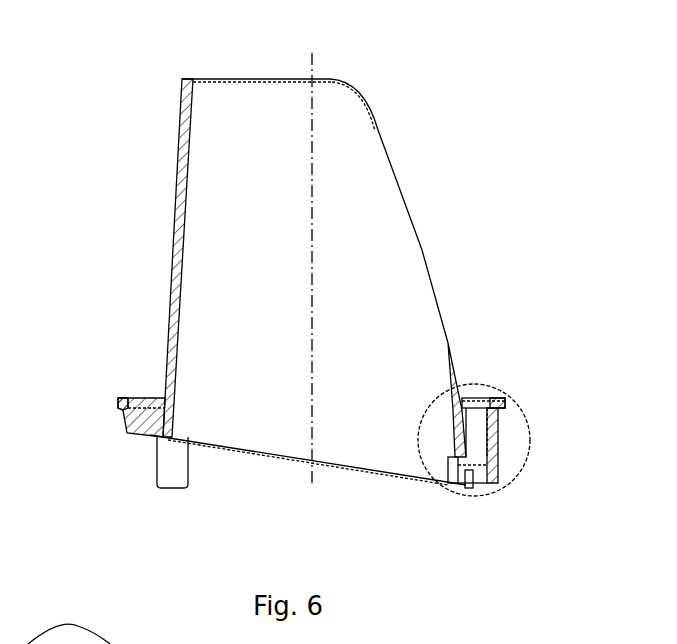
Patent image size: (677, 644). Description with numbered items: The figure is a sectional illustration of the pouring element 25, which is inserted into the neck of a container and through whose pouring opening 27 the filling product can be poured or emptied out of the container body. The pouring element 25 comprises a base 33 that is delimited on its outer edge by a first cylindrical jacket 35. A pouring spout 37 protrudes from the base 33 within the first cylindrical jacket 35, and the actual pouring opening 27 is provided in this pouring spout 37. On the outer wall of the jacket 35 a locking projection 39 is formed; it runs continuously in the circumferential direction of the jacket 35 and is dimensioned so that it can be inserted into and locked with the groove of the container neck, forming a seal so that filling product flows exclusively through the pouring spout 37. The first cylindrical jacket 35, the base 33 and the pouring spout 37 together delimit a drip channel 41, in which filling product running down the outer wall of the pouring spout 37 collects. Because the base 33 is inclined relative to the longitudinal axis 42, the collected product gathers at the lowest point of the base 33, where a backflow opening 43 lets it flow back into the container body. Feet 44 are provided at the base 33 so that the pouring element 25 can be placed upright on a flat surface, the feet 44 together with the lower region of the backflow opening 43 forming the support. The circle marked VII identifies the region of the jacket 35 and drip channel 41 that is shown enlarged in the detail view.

The pouring element 25 is at (334, 243).
The pouring opening 27 is at (240, 122).
The base 33 is at (143, 430).
The first cylindrical jacket 35 is at (492, 440).
The pouring spout 37 is at (400, 250).
The locking projection 39 is at (118, 402).
The drip channel 41 is at (482, 378).
The longitudinal axis 42 is at (312, 415).
The backflow opening 43 is at (467, 483).
The feet 44 is at (175, 470).
The detail view VII is at (532, 393).